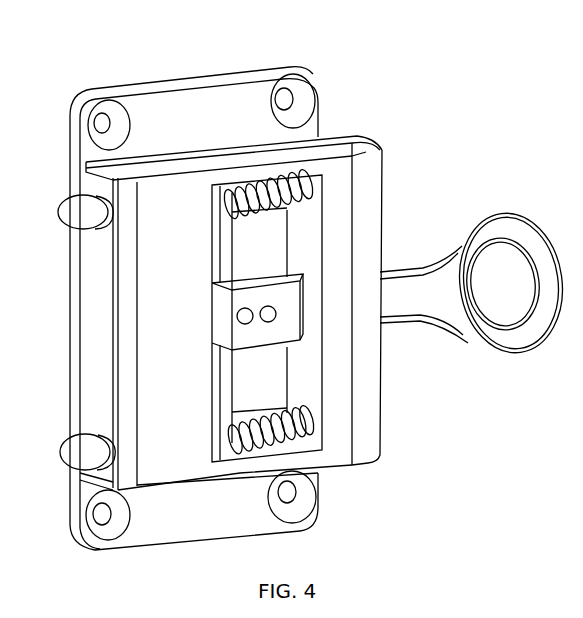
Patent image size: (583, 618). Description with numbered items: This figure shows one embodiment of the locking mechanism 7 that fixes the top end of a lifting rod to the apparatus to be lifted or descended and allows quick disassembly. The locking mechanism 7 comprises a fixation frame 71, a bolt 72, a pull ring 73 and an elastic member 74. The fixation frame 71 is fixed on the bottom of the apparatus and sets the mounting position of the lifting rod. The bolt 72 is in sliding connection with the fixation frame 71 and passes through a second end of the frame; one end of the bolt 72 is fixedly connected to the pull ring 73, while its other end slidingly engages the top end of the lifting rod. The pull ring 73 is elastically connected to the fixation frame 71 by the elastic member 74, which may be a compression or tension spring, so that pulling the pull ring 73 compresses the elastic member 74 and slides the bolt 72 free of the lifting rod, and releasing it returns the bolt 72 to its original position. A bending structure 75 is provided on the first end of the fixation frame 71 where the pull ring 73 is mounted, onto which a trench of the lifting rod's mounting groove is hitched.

The locking mechanism 7 is at (190, 73).
The fixation frame 71 is at (253, 133).
The bolt 72 is at (78, 212).
The pull ring 73 is at (443, 302).
The elastic member 74 is at (290, 435).
The bending structure 75 is at (367, 168).